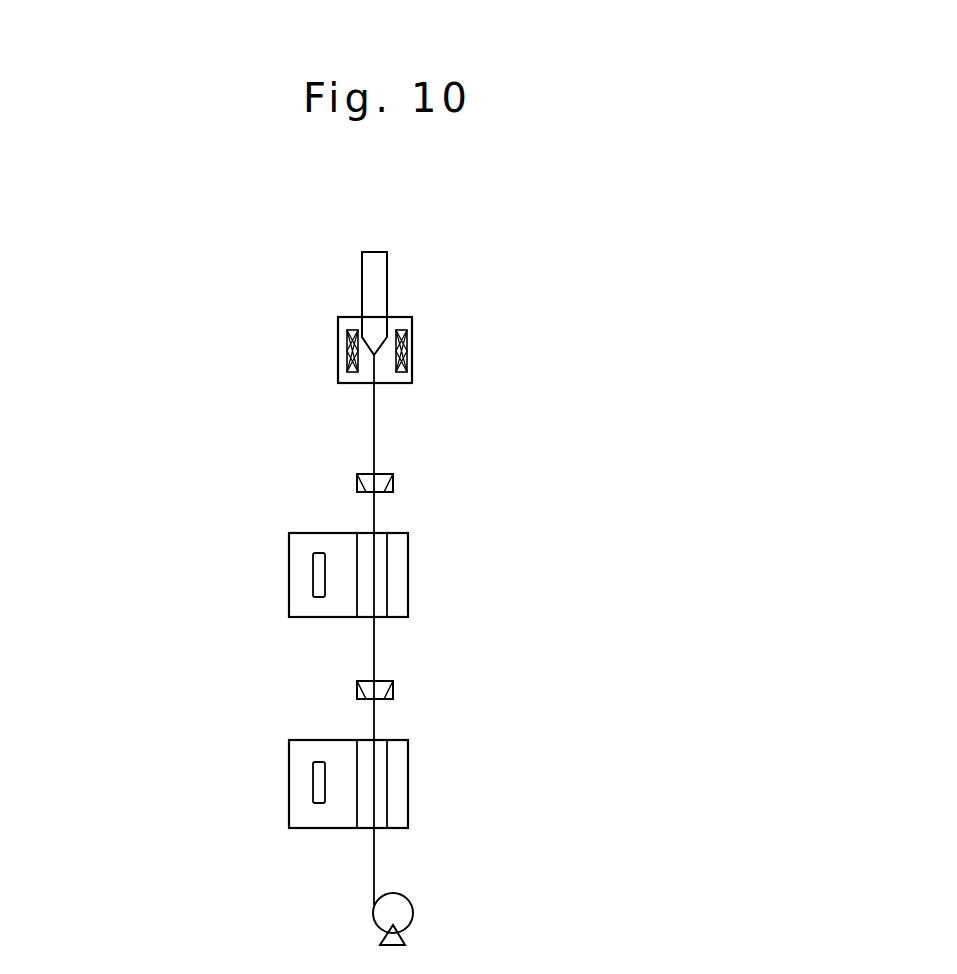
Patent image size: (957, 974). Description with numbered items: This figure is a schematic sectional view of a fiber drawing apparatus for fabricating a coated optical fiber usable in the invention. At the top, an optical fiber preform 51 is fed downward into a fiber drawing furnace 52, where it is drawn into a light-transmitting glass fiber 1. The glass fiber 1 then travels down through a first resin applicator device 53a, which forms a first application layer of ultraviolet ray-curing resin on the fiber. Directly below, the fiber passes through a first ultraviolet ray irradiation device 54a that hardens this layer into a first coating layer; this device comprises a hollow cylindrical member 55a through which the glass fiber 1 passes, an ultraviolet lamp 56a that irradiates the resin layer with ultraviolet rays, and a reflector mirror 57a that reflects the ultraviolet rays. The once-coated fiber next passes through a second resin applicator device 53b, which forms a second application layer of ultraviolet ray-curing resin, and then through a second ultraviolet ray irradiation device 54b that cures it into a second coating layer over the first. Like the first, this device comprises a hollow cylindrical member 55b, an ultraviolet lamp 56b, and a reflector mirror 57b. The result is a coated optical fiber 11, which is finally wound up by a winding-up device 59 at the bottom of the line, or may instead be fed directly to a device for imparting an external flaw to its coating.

The optical fiber preform 51 is at (379, 289).
The fiber drawing furnace 52 is at (413, 324).
The glass fiber 1 is at (376, 418).
The first resin applicator device 53a is at (394, 485).
The first ultraviolet ray irradiation device 54a is at (426, 551).
The hollow cylindrical member 55a is at (389, 548).
The ultraviolet lamp 56a is at (318, 553).
The reflector mirror 57a is at (409, 585).
The second resin applicator device 53b is at (394, 690).
The second ultraviolet ray irradiation device 54b is at (347, 763).
The hollow cylindrical member 55b is at (389, 765).
The ultraviolet lamp 56b is at (318, 762).
The reflector mirror 57b is at (289, 770).
The coated optical fiber 11 is at (375, 870).
The winding-up device 59 is at (413, 915).